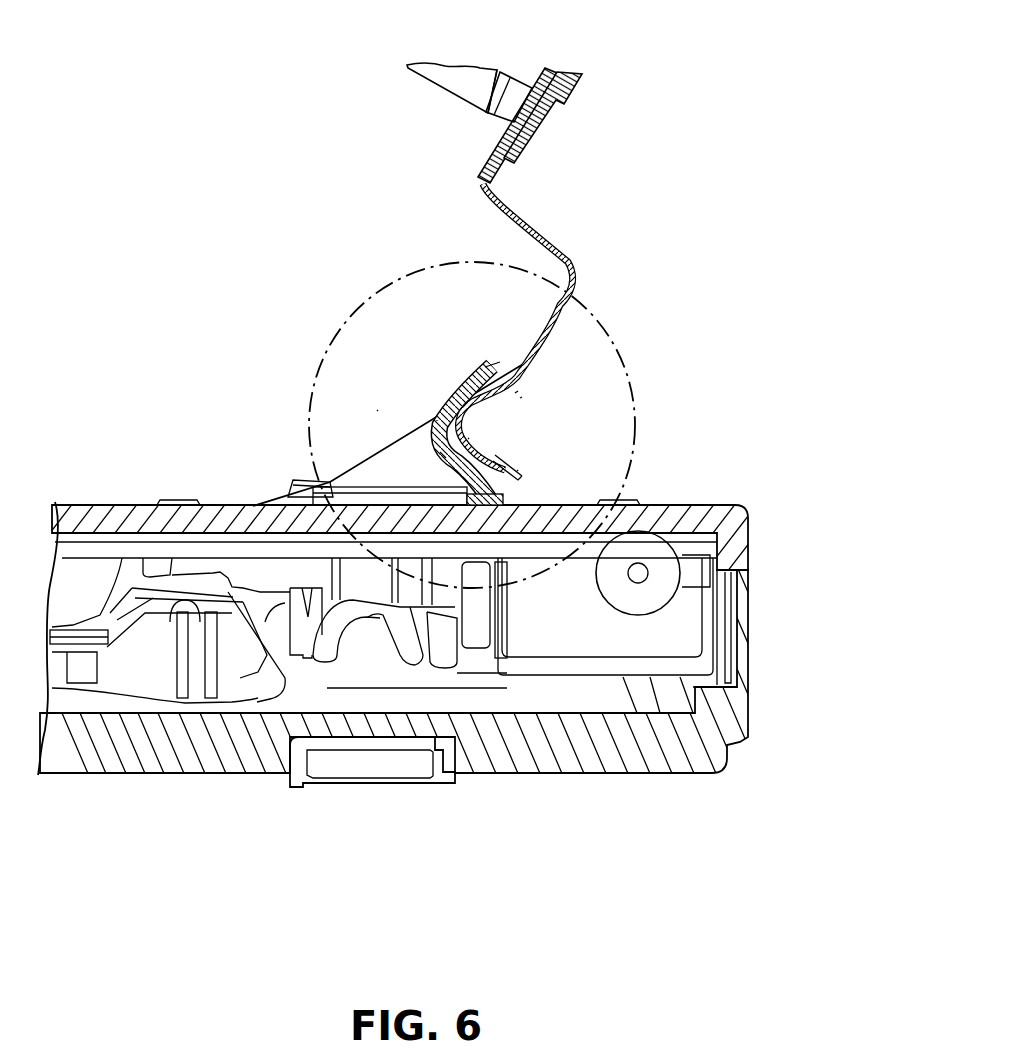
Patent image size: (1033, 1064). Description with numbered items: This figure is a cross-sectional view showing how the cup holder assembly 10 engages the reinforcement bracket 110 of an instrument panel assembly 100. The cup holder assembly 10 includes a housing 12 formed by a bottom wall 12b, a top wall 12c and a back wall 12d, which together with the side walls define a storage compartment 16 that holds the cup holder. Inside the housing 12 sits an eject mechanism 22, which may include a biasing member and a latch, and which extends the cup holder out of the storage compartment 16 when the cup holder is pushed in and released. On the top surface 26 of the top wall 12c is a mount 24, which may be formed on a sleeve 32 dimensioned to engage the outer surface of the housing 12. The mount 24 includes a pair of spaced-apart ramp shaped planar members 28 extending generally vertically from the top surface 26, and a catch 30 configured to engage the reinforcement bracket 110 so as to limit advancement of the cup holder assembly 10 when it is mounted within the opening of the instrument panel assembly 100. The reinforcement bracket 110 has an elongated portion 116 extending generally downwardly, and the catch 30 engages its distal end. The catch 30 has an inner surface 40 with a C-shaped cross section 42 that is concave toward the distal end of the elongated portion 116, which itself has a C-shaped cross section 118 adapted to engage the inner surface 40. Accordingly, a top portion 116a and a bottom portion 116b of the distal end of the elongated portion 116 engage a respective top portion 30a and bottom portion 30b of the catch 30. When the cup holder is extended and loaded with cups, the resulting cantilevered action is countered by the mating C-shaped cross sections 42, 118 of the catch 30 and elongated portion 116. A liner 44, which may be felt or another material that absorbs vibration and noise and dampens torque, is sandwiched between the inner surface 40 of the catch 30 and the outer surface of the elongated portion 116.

The cup holder assembly 10 is at (665, 802).
The housing 12 is at (436, 657).
The bottom wall 12b is at (150, 777).
The top wall 12c is at (108, 507).
The back wall 12d is at (748, 650).
The storage compartment 16 is at (557, 632).
The eject mechanism 22 is at (312, 672).
The mount 24 is at (410, 403).
The top surface 26 is at (287, 490).
The ramp shaped planar member 28 is at (413, 435).
The catch 30 is at (388, 363).
The top portion of catch 30a is at (493, 365).
The bottom portion of catch 30b is at (440, 452).
The sleeve 32 is at (433, 780).
The inner surface 40 is at (505, 365).
The C-shaped cross section 42 is at (377, 412).
The liner 44 is at (515, 393).
The instrument panel assembly 100 is at (582, 242).
The reinforcement bracket 110 is at (540, 235).
The elongated portion 116 is at (608, 332).
The top portion of elongated portion 116a is at (520, 398).
The bottom portion of elongated portion 116b is at (517, 470).
The C-shaped cross section 118 is at (550, 407).